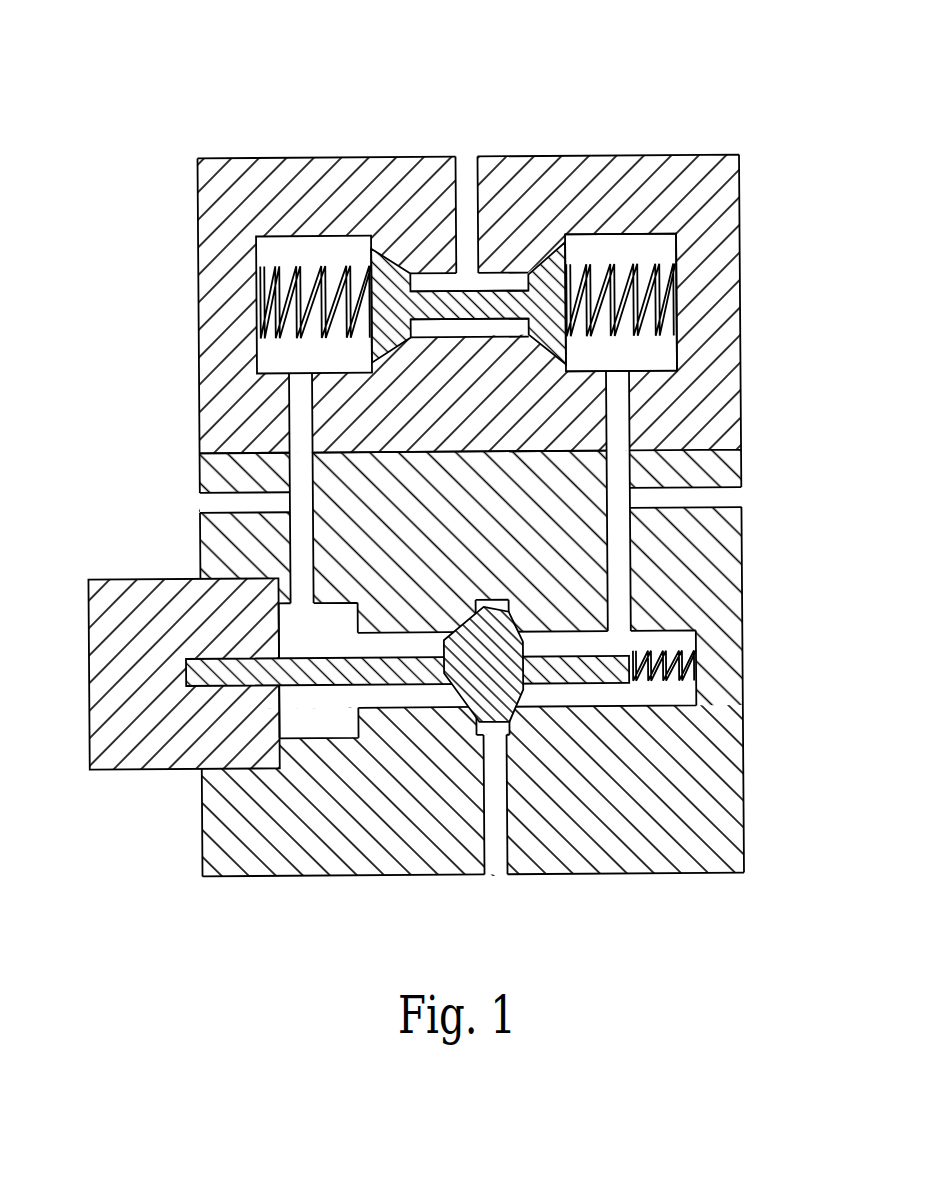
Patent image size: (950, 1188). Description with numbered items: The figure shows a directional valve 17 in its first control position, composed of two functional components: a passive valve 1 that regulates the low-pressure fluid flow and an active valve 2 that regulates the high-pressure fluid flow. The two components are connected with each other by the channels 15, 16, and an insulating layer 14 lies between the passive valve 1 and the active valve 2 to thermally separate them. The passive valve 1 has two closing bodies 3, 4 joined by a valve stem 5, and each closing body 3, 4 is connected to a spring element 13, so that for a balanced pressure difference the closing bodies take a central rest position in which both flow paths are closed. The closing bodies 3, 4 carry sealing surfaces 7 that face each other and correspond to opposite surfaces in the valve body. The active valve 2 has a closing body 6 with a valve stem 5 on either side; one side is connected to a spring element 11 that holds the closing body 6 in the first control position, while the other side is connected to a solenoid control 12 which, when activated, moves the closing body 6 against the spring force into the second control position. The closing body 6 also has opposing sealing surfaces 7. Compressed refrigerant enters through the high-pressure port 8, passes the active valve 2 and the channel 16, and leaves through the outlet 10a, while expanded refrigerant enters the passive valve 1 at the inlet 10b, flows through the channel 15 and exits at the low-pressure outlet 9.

The passive valve 1 is at (215, 195).
The active valve 2 is at (225, 848).
The closing body 3 is at (373, 250).
The closing body 4 is at (600, 235).
The valve stem 5 is at (440, 288).
The closing body 6 is at (523, 708).
The sealing surfaces 7 is at (392, 257).
The port 8 is at (493, 860).
The low-pressure outlet 9 is at (470, 182).
The outlet 10a is at (217, 502).
The inlet 10b is at (728, 502).
The spring element 11 is at (697, 673).
The solenoid control 12 is at (130, 603).
The spring element 13 is at (272, 280).
The insulating layer 14 is at (292, 453).
The channel 15 is at (622, 437).
The channel 16 is at (300, 402).
The directional valve 17 is at (250, 54).